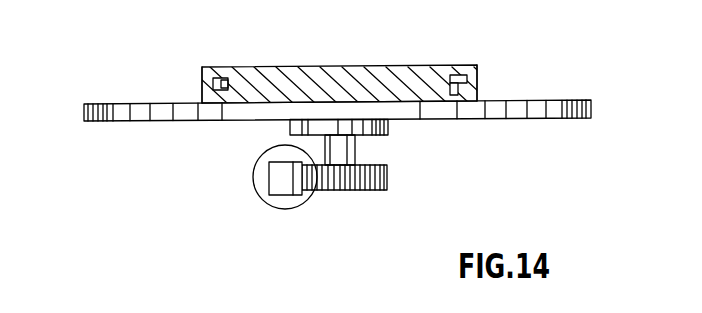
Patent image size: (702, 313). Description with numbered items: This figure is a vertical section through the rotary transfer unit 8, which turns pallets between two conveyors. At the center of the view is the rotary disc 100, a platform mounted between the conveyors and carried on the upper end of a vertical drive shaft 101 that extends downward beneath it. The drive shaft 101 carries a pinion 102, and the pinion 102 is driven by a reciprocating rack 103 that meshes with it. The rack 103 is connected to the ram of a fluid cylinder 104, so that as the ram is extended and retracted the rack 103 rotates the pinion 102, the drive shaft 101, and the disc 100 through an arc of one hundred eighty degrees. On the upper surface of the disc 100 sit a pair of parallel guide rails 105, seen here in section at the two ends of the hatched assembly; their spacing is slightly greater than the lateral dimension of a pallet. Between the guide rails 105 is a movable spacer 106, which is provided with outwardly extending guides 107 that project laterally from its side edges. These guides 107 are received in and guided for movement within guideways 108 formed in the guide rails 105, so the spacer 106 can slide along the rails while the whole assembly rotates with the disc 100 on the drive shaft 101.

The rotary transfer unit 8 is at (480, 62).
The rotary disc 100 is at (570, 100).
The vertical drive shaft 101 is at (340, 150).
The pinion 102 is at (388, 170).
The reciprocating rack 103 is at (280, 180).
The fluid cylinder 104 is at (289, 200).
The guide rails 105 is at (207, 70).
The movable spacer 106 is at (325, 68).
The guides 107 is at (222, 92).
The guideways 108 is at (222, 90).